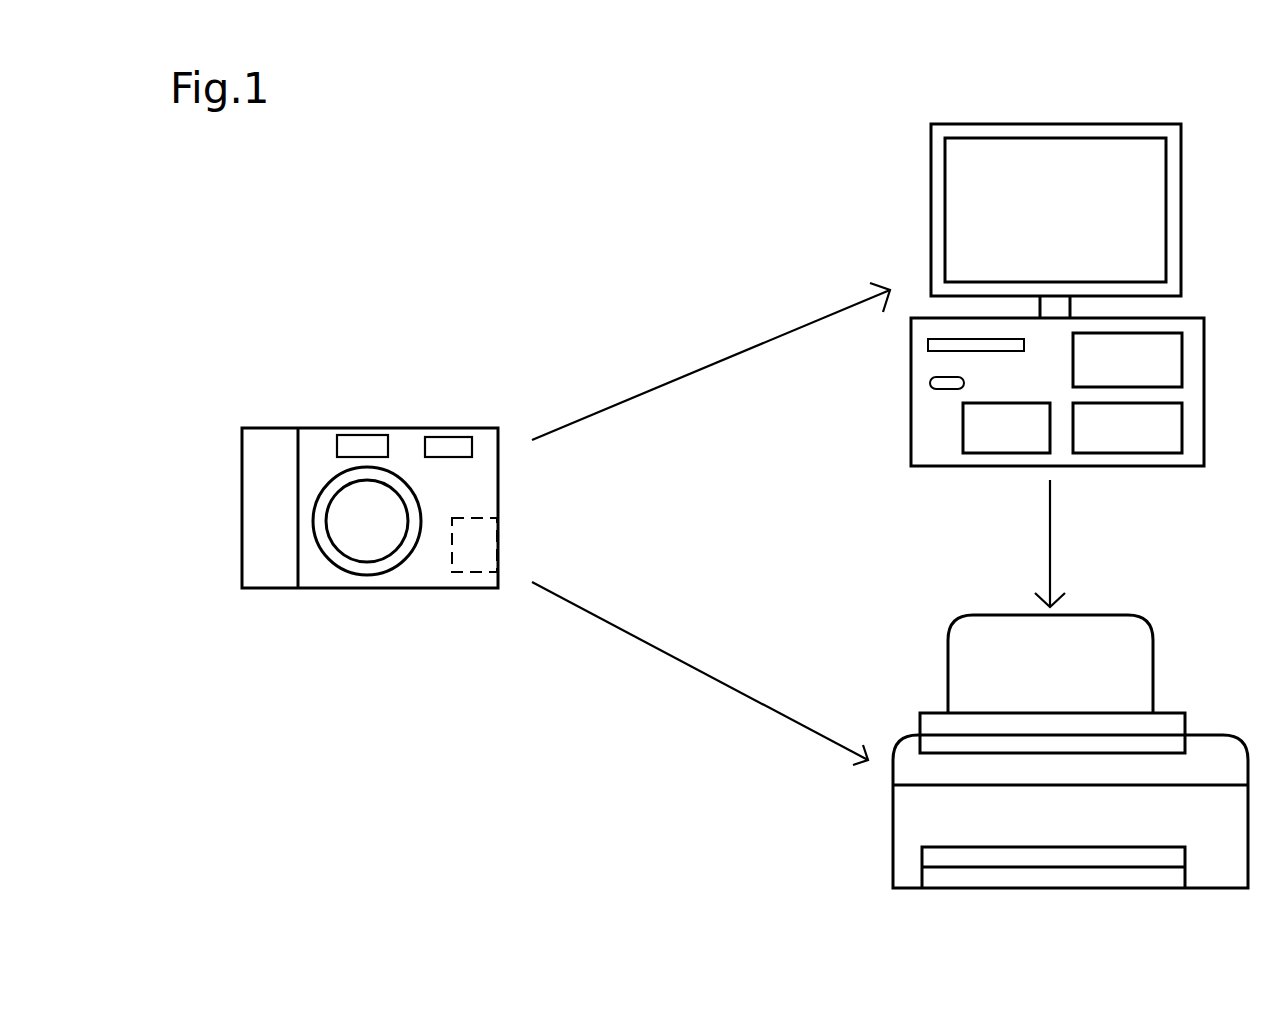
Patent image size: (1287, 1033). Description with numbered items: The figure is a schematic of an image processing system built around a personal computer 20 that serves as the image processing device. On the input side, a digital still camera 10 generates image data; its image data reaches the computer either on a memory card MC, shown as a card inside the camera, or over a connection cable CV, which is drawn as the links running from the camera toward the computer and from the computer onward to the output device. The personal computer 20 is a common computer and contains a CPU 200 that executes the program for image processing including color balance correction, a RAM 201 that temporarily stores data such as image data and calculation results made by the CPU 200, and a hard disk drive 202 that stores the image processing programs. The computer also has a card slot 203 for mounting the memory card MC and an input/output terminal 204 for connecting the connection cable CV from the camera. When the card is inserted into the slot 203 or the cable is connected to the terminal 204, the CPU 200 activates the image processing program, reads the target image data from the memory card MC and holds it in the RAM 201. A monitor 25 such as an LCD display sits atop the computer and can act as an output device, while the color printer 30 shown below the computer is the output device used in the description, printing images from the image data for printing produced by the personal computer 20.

The digital still camera 10 is at (383, 428).
The memory card MC is at (470, 552).
The connection cable CV is at (690, 364).
The personal computer 20 is at (1038, 311).
The monitor 25 is at (1172, 229).
The CPU 200 is at (1160, 423).
The RAM 201 is at (1167, 361).
The hard disk drive 202 is at (985, 442).
The card slot 203 is at (925, 344).
The input/output terminal 204 is at (928, 384).
The color printer 30 is at (1235, 735).